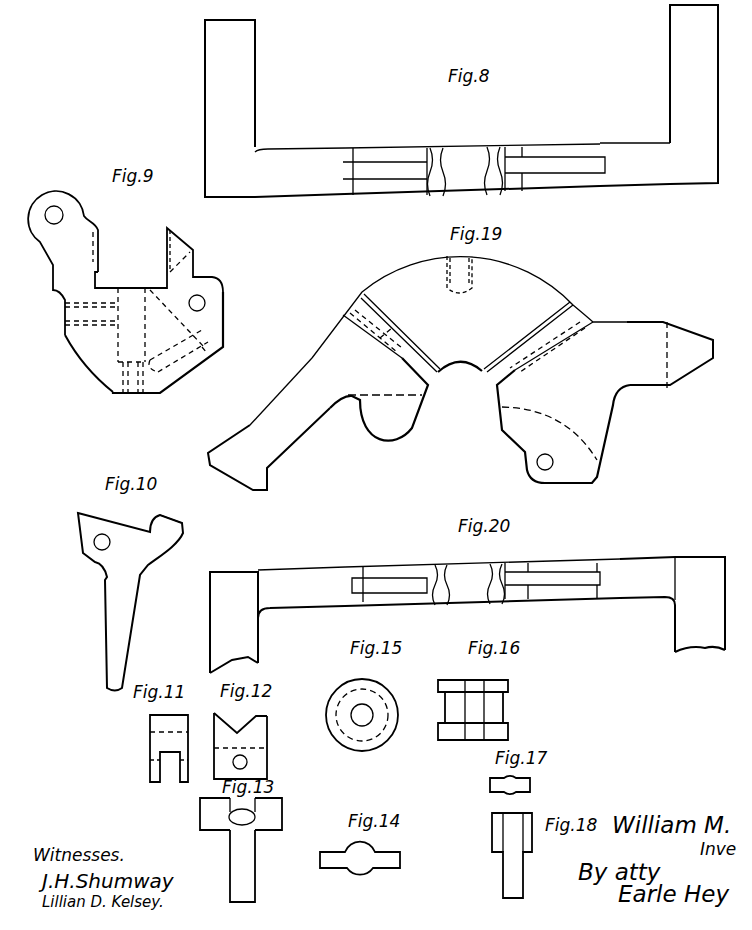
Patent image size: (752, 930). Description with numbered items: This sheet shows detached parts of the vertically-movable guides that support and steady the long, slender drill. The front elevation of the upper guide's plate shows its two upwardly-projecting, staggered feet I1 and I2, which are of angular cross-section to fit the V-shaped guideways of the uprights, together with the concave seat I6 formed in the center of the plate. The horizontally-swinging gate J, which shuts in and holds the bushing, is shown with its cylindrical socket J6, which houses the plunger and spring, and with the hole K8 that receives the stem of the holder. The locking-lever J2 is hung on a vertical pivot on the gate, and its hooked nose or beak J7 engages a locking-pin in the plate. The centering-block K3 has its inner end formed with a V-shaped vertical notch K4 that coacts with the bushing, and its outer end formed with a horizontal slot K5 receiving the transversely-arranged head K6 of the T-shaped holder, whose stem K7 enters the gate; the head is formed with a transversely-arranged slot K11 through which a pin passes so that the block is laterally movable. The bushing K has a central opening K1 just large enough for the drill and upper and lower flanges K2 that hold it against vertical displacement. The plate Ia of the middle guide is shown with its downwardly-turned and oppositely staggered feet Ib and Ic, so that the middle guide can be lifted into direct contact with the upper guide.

In FIG. 8, the foot I2 is at (275, 108).
In FIG. 8, the foot I1 is at (659, 95).
In FIG. 8, the concave seat I6 is at (474, 170).
In FIG. 9, the gate J is at (63, 263).
In FIG. 9, the hole K8 is at (144, 310).
In FIG. 9, the cylindrical socket J6 is at (168, 342).
In FIG. 19, the plate Ia is at (471, 369).
In FIG. 20, the plate Ia is at (474, 575).
In FIG. 19, the foot Ib is at (670, 356).
In FIG. 20, the foot Ib is at (672, 604).
In FIG. 19, the foot Ic is at (269, 424).
In FIG. 20, the foot Ic is at (277, 620).
In FIG. 10, the locking-lever J2 is at (130, 602).
In FIG. 10, the hooked nose or beak J7 is at (165, 533).
In FIG. 11, the centering-block K3 is at (150, 727).
In FIG. 12, the centering-block K3 is at (267, 723).
In FIG. 11, the horizontal slot K5 is at (160, 762).
In FIG. 12, the horizontal slot K5 is at (255, 748).
In FIG. 12, the V-shaped vertical notch K4 is at (240, 717).
In FIG. 13, the head K6 is at (200, 812).
In FIG. 13, the transversely-arranged slot K11 is at (236, 822).
In FIG. 13, the stem K7 is at (255, 842).
In FIG. 15, the bushing K is at (362, 681).
In FIG. 15, the central opening K1 is at (368, 710).
In FIG. 15, the flanges K2 is at (368, 746).
In FIG. 16, the flanges K2 is at (520, 720).